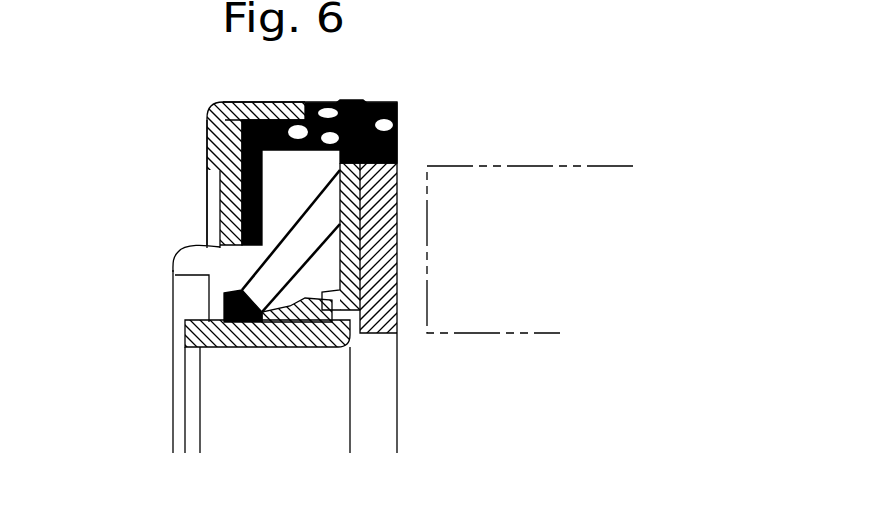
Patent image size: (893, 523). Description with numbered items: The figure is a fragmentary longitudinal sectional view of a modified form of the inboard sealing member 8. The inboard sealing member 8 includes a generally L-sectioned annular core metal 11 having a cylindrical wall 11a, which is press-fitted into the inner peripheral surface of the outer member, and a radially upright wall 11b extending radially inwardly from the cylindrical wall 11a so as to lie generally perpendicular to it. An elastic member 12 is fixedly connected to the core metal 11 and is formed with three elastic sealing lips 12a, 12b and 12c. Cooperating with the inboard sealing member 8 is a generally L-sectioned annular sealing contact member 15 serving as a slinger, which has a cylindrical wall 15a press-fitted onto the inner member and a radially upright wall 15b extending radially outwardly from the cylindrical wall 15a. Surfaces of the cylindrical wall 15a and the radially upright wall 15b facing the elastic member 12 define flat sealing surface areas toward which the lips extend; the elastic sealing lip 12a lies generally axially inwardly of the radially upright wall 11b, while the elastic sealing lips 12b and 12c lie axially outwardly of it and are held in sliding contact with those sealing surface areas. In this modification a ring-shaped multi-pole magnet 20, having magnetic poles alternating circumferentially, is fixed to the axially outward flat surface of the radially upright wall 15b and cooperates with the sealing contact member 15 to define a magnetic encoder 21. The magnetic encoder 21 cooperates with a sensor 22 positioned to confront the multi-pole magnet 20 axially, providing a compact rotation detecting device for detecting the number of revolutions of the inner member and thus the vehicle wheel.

The inboard sealing member 8 is at (152, 198).
The core metal 11 is at (200, 108).
The cylindrical wall 11a is at (272, 104).
The radially upright wall 11b is at (212, 197).
The elastic member 12 is at (260, 191).
The elastic sealing lip 12a is at (210, 299).
The elastic sealing lip 12b is at (360, 258).
The elastic sealing lip 12c is at (360, 207).
The annular sealing contact member 15 is at (478, 387).
The cylindrical wall 15a is at (282, 348).
The radially upright wall 15b is at (352, 295).
The multi-pole magnet 20 is at (397, 293).
The magnetic encoder 21 is at (543, 362).
The sensor 22 is at (577, 190).